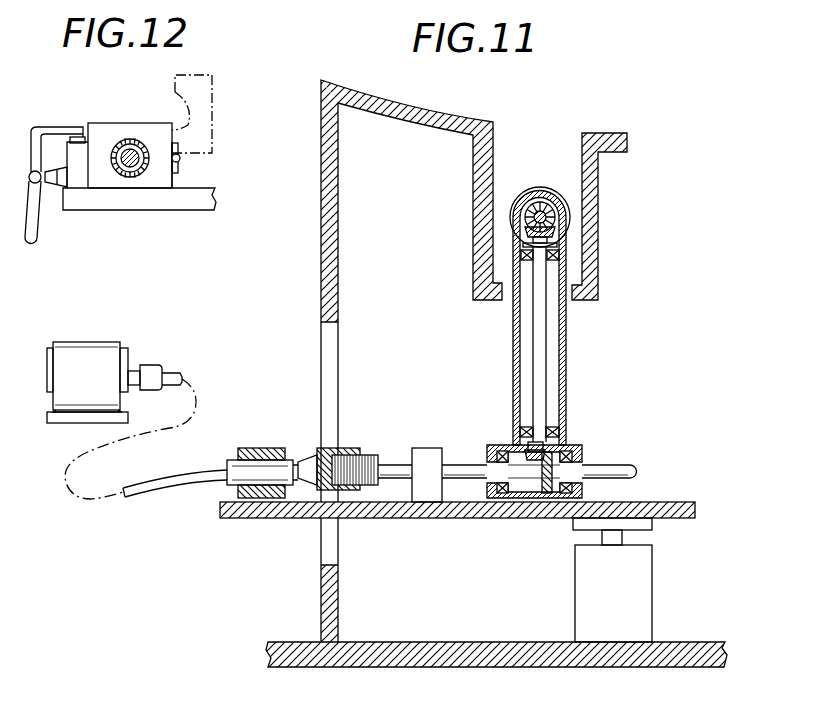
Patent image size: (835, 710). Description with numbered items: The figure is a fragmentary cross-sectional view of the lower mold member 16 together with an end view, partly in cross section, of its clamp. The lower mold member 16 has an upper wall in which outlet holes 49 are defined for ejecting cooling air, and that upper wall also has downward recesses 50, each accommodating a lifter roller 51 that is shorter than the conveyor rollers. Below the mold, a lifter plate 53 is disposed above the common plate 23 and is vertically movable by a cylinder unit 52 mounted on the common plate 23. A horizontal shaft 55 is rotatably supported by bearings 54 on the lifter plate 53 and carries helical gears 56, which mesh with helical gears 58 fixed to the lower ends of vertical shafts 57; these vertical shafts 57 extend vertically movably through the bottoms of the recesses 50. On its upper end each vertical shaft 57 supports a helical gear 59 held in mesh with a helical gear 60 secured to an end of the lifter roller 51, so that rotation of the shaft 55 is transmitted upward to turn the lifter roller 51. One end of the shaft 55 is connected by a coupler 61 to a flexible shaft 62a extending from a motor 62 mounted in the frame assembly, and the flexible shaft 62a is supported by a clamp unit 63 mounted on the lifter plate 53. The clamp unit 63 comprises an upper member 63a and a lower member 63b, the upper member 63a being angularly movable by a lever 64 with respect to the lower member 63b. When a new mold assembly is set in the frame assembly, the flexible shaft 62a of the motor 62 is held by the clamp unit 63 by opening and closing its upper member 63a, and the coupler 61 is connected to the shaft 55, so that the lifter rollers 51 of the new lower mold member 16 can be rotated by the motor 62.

In FIG. 11, the lower mold member 16 is at (321, 200).
In FIG. 11, the common plate 23 is at (410, 653).
In FIG. 11, the outlet holes 49 is at (410, 117).
In FIG. 11, the downward recesses 50 is at (493, 158).
In FIG. 11, the lifter roller 51 is at (543, 187).
In FIG. 11, the cylinder unit 52 is at (638, 613).
In FIG. 11, the lifter plate 53 is at (463, 518).
In FIG. 11, the bearings 54 is at (425, 455).
In FIG. 11, the shaft 55 is at (613, 463).
In FIG. 11, the helical gears 56 is at (548, 498).
In FIG. 11, the vertical shafts 57 is at (553, 366).
In FIG. 11, the helical gears 58 is at (527, 445).
In FIG. 11, the helical gear 59 is at (523, 232).
In FIG. 11, the helical gear 60 is at (552, 220).
In FIG. 11, the coupler 61 is at (350, 450).
In FIG. 11, the motor 62 is at (103, 353).
In FIG. 11, the flexible shaft 62a is at (173, 487).
In FIG. 12, the flexible shaft 62a is at (149, 157).
In FIG. 11, the clamp unit 63 is at (267, 447).
In FIG. 12, the clamp unit 63 is at (208, 112).
In FIG. 12, the upper member 63a is at (132, 123).
In FIG. 12, the lower member 63b is at (158, 182).
In FIG. 12, the lever 64 is at (38, 235).